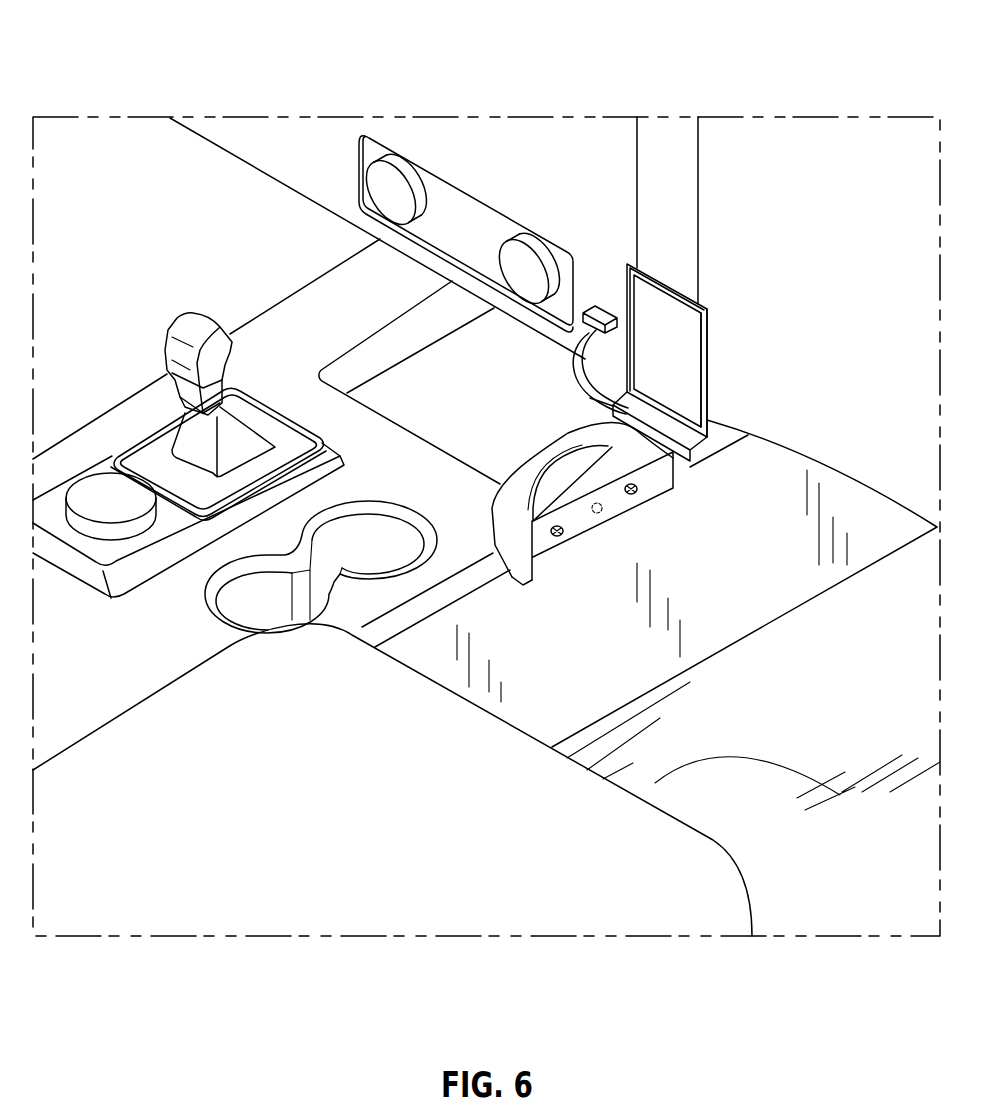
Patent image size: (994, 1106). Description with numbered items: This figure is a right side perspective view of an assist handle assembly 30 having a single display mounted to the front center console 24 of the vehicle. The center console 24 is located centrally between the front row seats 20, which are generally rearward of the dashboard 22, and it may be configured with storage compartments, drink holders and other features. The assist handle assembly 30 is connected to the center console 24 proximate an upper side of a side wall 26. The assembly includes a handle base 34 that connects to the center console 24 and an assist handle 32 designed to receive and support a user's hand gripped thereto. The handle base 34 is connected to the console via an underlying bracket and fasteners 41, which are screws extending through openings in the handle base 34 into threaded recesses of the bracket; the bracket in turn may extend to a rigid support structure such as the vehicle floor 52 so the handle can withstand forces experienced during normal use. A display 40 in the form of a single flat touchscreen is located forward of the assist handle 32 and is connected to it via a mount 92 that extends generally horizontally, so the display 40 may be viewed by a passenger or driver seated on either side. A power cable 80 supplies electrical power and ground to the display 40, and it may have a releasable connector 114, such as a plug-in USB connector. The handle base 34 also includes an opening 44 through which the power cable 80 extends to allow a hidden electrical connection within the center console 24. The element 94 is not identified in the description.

The seats 20 is at (677, 867).
The dashboard 22 is at (450, 157).
The front center console 24 is at (376, 452).
The side wall 26 is at (820, 510).
The assist handle assembly 30 is at (560, 408).
The assist handle 32 is at (528, 480).
The handle base 34 is at (688, 469).
The display 40 is at (700, 258).
The fasteners 41 is at (636, 486).
The opening 44 is at (603, 508).
The vehicle floor 52 is at (700, 763).
The power cable 80 is at (598, 306).
The mount 92 is at (645, 417).
The side rail 94 is at (707, 328).
The releasable connector 114 is at (622, 243).